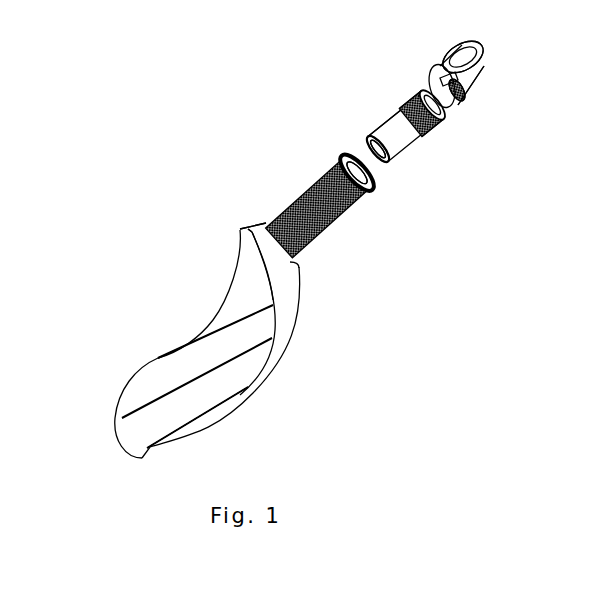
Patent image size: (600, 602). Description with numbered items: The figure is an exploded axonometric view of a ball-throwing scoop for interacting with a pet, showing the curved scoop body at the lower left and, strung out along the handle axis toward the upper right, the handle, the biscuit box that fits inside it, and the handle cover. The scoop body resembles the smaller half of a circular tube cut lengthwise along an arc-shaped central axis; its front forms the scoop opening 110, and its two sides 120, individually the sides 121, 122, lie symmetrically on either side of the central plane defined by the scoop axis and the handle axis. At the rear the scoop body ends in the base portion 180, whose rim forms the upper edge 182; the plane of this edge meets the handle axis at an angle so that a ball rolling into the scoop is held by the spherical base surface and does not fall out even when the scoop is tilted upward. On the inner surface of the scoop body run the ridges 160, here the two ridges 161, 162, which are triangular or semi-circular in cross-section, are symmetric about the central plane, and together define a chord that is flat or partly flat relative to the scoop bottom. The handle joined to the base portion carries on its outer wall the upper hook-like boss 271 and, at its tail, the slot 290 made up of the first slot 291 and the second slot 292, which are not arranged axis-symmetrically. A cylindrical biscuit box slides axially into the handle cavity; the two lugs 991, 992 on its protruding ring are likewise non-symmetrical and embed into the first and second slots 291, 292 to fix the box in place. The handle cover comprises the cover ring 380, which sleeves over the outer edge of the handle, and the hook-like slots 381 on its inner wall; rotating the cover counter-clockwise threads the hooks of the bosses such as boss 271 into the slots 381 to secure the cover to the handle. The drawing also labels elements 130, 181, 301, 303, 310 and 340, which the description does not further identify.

The scoop opening 110 is at (123, 446).
The two sides 120 is at (291, 393).
The side 121 is at (158, 358).
The side 122 is at (188, 426).
The handle body 130 is at (303, 338).
The ridges 160 is at (72, 350).
The ridge 161 is at (165, 396).
The ridge 162 is at (148, 446).
The base portion 180 is at (173, 194).
The head top surface 181 is at (261, 233).
The upper edge 182 is at (253, 255).
The upper hook-like boss 271 is at (366, 202).
The slot 290 is at (295, 108).
The first slot 291 is at (364, 146).
The second slot 292 is at (370, 166).
The coupler sleeve 301 is at (385, 124).
The cap rear ring 303 is at (464, 45).
The end cap 310 is at (430, 72).
The knurled collar 340 is at (332, 239).
The cover ring 380 is at (450, 108).
The slots 381 is at (462, 97).
The lug 991 is at (403, 103).
The lug 992 is at (427, 138).